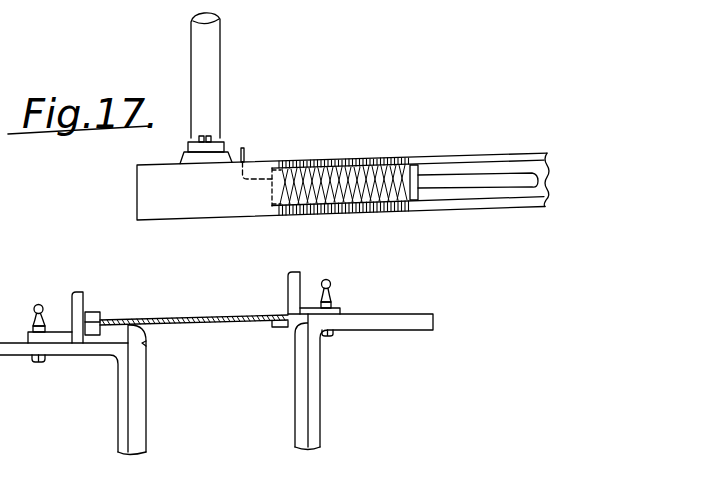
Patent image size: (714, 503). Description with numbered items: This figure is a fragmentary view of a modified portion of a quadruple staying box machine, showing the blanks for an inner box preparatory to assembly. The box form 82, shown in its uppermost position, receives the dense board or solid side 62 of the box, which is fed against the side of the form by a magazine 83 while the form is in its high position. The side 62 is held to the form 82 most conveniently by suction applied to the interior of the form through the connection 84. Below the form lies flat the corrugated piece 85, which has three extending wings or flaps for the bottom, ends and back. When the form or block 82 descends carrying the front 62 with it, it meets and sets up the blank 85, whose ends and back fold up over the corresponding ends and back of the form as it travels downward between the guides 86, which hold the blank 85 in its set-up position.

The box form 82 is at (150, 180).
The connection 84 is at (246, 158).
The box side 62 is at (283, 208).
The magazine 83 is at (386, 200).
The corrugated piece 85 is at (213, 304).
The guides 86 is at (135, 413).